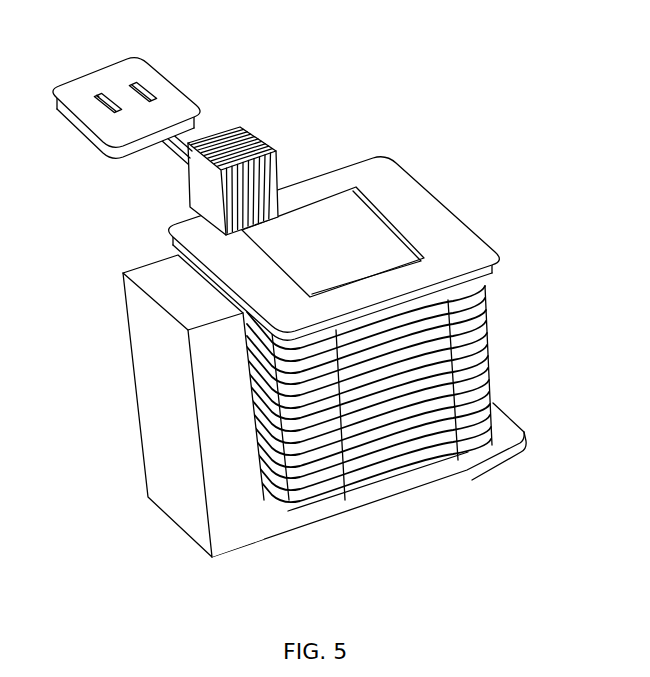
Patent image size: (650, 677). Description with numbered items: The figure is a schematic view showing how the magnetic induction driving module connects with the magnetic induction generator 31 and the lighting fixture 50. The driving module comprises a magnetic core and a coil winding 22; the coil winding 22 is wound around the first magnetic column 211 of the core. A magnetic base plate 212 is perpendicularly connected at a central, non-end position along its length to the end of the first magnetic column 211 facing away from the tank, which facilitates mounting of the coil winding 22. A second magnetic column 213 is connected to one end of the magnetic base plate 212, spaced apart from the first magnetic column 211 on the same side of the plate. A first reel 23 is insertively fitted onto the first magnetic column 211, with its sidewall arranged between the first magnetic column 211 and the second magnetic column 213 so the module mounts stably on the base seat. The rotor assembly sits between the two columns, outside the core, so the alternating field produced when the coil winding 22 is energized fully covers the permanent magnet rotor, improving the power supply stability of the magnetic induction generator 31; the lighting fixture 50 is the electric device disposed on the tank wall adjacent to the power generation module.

The lighting fixture 50 is at (165, 97).
The magnetic induction generator 31 is at (253, 140).
The first magnetic column 211 is at (362, 228).
The first reel 23 is at (456, 234).
The coil winding 22 is at (493, 355).
The second magnetic column 213 is at (167, 388).
The magnetic base plate 212 is at (338, 515).